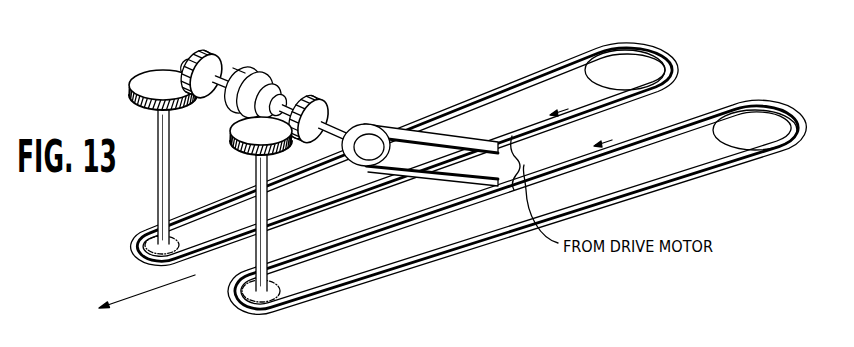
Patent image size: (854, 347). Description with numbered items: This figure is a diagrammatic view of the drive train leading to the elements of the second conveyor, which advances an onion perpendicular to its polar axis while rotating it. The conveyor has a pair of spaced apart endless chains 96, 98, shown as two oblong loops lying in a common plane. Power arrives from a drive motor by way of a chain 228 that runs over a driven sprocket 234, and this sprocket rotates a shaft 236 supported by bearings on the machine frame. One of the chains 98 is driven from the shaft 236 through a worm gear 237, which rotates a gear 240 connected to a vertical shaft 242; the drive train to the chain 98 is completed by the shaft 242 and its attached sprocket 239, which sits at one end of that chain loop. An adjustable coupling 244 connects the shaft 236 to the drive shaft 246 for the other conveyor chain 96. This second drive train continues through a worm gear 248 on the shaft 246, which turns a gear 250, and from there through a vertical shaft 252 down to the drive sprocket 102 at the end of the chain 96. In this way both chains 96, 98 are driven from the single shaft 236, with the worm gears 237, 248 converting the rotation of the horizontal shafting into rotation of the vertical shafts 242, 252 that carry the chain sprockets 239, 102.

The endless chain 96 is at (329, 203).
The endless chain 98 is at (452, 250).
The drive sprocket 102 is at (146, 239).
The chain 228 is at (448, 137).
The driven sprocket 234 is at (375, 147).
The shaft 236 is at (331, 128).
The worm gear 237 is at (318, 99).
The sprocket 239 is at (232, 297).
The gear 240 is at (239, 132).
The vertical shaft 242 is at (256, 262).
The adjustable coupling 244 is at (277, 73).
The drive shaft 246 is at (225, 78).
The worm gear 248 is at (200, 53).
The gear 250 is at (138, 78).
The shaft 252 is at (158, 158).